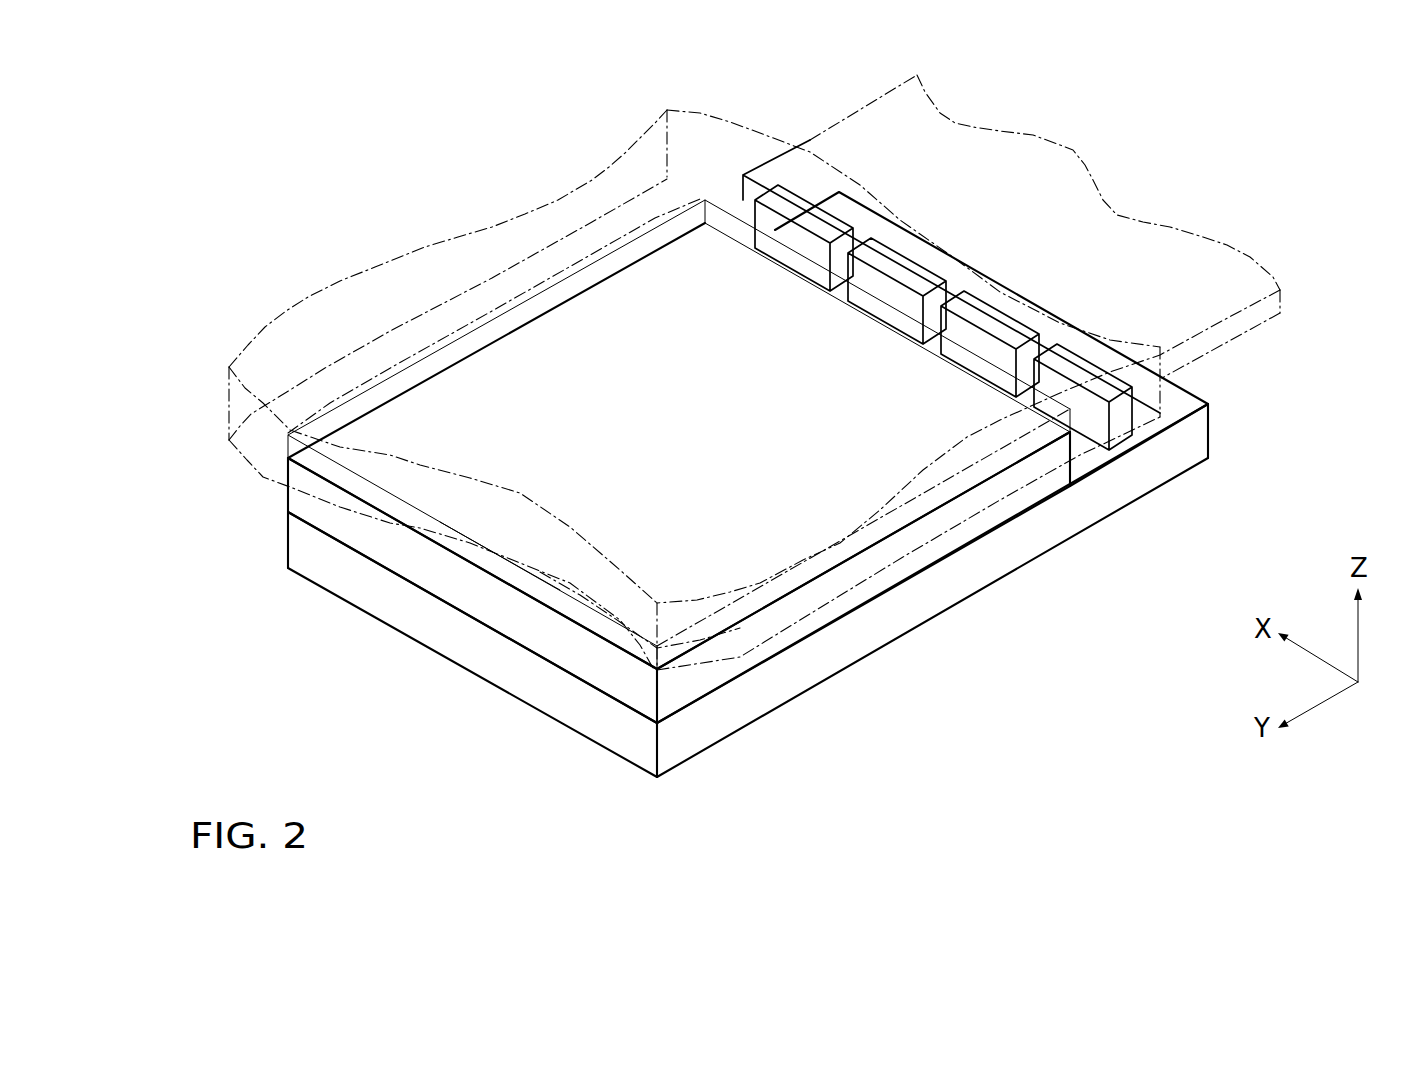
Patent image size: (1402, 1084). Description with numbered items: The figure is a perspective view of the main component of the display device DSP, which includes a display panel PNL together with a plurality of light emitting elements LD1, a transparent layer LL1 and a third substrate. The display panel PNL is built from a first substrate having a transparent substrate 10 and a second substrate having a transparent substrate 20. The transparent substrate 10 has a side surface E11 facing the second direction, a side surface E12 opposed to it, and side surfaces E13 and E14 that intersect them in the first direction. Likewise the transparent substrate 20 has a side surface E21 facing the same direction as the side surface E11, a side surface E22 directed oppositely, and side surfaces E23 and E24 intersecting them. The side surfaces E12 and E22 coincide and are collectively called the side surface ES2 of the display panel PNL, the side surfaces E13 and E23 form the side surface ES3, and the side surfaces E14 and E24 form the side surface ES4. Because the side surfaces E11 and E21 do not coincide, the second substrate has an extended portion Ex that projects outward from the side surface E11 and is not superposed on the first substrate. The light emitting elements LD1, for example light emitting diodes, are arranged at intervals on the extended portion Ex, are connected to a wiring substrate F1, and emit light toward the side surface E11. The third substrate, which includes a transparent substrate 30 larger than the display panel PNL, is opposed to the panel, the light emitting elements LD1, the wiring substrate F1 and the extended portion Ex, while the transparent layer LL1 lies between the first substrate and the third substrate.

The display device DSP is at (990, 722).
The display panel PNL is at (812, 690).
The transparent substrate 10 is at (675, 700).
The transparent substrate 20 is at (638, 740).
The transparent substrate 30 is at (903, 553).
The transparent layer LL1 is at (540, 594).
The side surface ES2 is at (294, 637).
The side surface ES3 is at (161, 482).
The side surface ES4 is at (1150, 575).
The side surface E11 is at (1080, 472).
The side surface E12 is at (432, 570).
The side surface E13 is at (280, 498).
The side surface E14 is at (1004, 510).
The side surface E21 is at (1216, 406).
The side surface E22 is at (429, 626).
The side surface E23 is at (280, 539).
The side surface E24 is at (1004, 560).
The extended portion Ex is at (1180, 399).
The light emitting element LD1 is at (1148, 440).
The wiring substrate F1 is at (1250, 333).